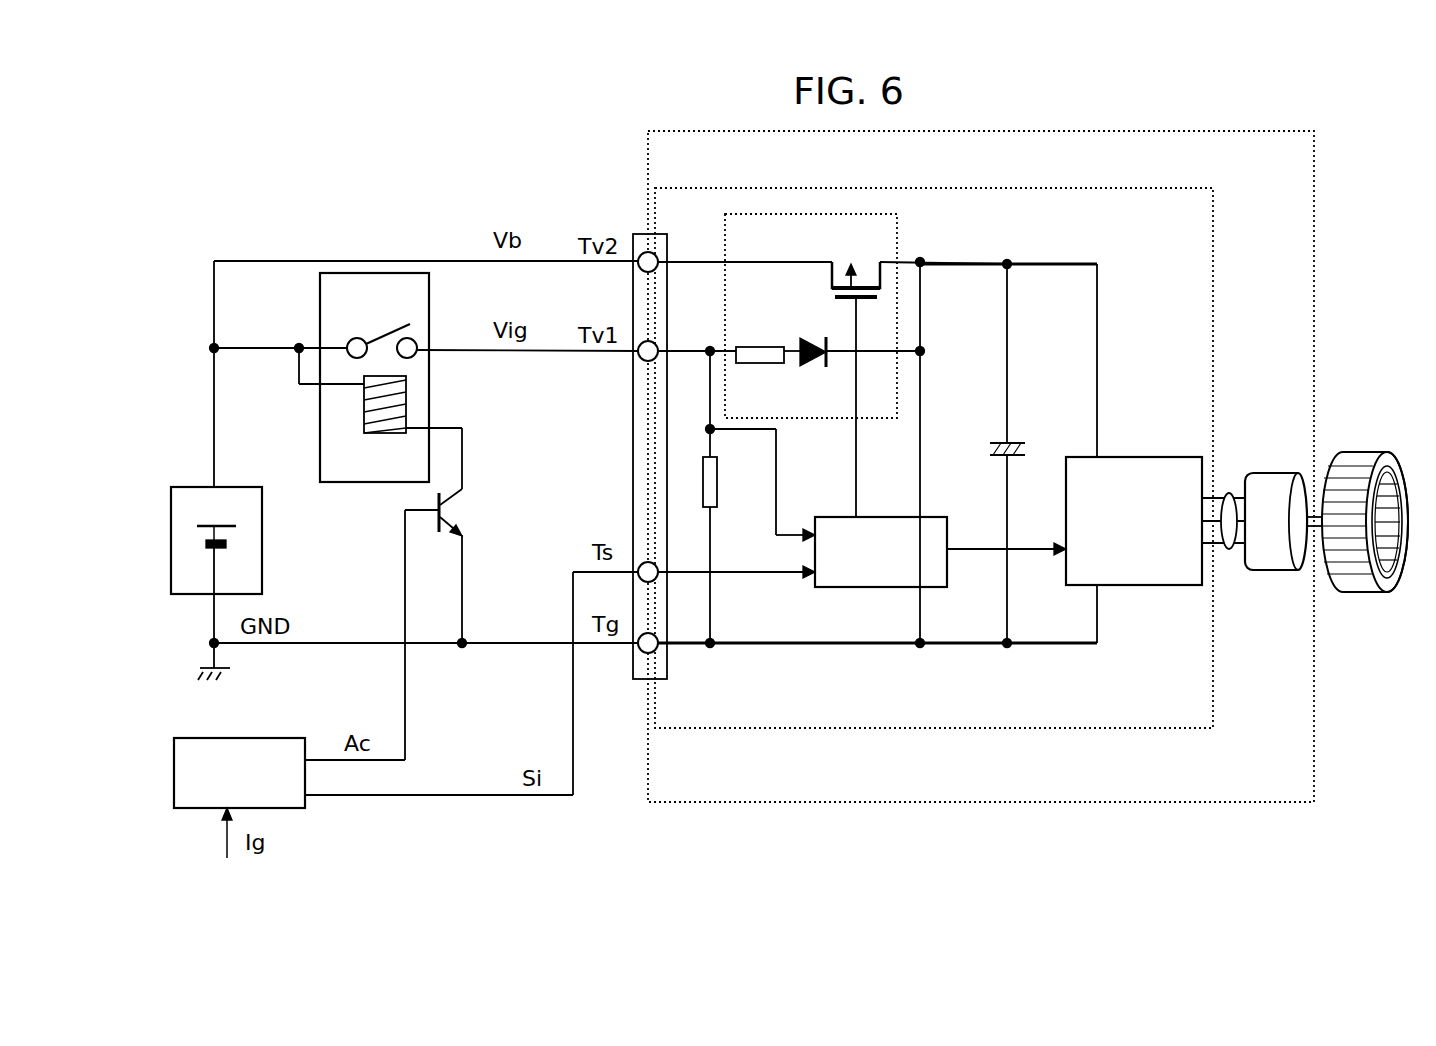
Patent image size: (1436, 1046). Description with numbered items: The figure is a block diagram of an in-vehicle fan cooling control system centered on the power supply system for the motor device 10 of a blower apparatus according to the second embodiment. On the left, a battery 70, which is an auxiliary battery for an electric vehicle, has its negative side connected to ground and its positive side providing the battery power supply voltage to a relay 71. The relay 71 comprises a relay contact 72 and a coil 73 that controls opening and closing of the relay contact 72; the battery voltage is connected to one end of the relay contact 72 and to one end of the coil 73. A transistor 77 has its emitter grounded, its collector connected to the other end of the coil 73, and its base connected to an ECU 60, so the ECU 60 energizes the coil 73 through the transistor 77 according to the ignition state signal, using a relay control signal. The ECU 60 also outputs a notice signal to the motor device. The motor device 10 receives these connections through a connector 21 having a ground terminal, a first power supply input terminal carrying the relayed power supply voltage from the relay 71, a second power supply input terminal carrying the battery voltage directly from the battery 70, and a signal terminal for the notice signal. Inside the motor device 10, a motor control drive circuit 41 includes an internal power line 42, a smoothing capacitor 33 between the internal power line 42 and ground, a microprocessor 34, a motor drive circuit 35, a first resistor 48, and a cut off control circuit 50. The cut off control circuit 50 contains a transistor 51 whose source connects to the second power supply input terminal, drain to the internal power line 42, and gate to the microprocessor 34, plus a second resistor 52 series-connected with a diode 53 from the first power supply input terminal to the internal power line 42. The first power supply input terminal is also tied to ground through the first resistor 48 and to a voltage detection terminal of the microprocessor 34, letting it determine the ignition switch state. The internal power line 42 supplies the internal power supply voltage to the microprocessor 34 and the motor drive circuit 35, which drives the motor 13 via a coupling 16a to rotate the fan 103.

The motor device 10 is at (1077, 131).
The motor control drive circuit 41 is at (1077, 188).
The connector 21 is at (640, 232).
The cut off control circuit 50 is at (841, 316).
The transistor 51 is at (830, 270).
The second resistor 52 is at (756, 345).
The diode 53 is at (806, 370).
The internal power line 42 is at (1072, 263).
The smoothing capacitor 33 is at (1000, 440).
The microprocessor 34 is at (876, 588).
The first resistor 48 is at (717, 482).
The motor drive circuit 35 is at (1117, 457).
The motor 13 is at (1258, 470).
The coupling 16a is at (1232, 549).
The fan 103 is at (1358, 452).
The relay 71 is at (333, 377).
The relay contact 72 is at (372, 339).
The coil 73 is at (395, 433).
The battery 70 is at (263, 561).
The transistor 77 is at (458, 511).
The ECU 60 is at (253, 737).